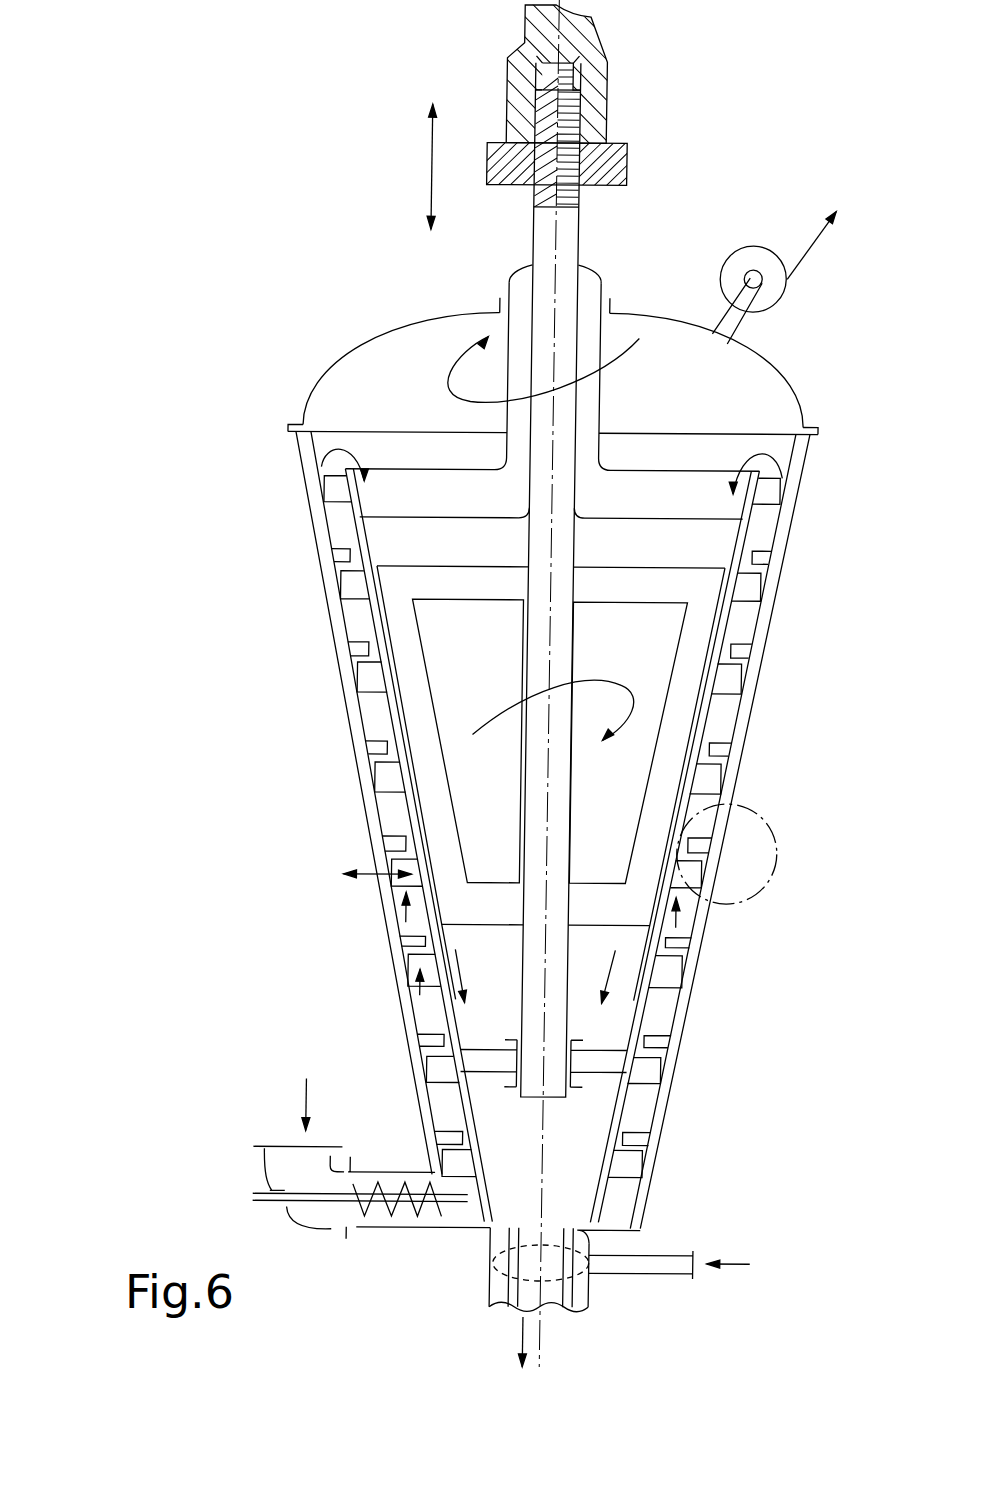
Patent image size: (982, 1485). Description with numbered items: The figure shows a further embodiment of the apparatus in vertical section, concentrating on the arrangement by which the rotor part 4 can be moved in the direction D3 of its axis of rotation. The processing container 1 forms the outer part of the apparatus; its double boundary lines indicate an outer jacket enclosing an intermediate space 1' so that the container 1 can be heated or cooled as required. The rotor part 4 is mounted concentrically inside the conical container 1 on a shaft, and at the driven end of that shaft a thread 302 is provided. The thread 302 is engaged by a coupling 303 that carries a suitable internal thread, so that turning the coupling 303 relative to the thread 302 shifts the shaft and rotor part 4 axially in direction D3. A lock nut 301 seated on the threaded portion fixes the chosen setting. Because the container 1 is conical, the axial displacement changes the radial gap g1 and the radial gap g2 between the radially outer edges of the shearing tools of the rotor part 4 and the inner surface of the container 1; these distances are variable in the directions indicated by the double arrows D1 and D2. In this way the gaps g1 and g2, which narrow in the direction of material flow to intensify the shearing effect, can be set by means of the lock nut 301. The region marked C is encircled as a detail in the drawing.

The coupling 303 is at (602, 72).
The lock nut 301 is at (618, 170).
The thread 302 is at (567, 238).
The processing container 1 is at (533, 830).
The intermediate space 1' is at (533, 830).
The rotor part 4 is at (483, 673).
The radial gap g1 is at (395, 891).
The radial gap g2 is at (328, 541).
The direction of gap variation D1 is at (357, 870).
The direction of gap variation D2 is at (430, 997).
The direction of axial rotor movement D3 is at (413, 166).
The detail circle C is at (765, 815).